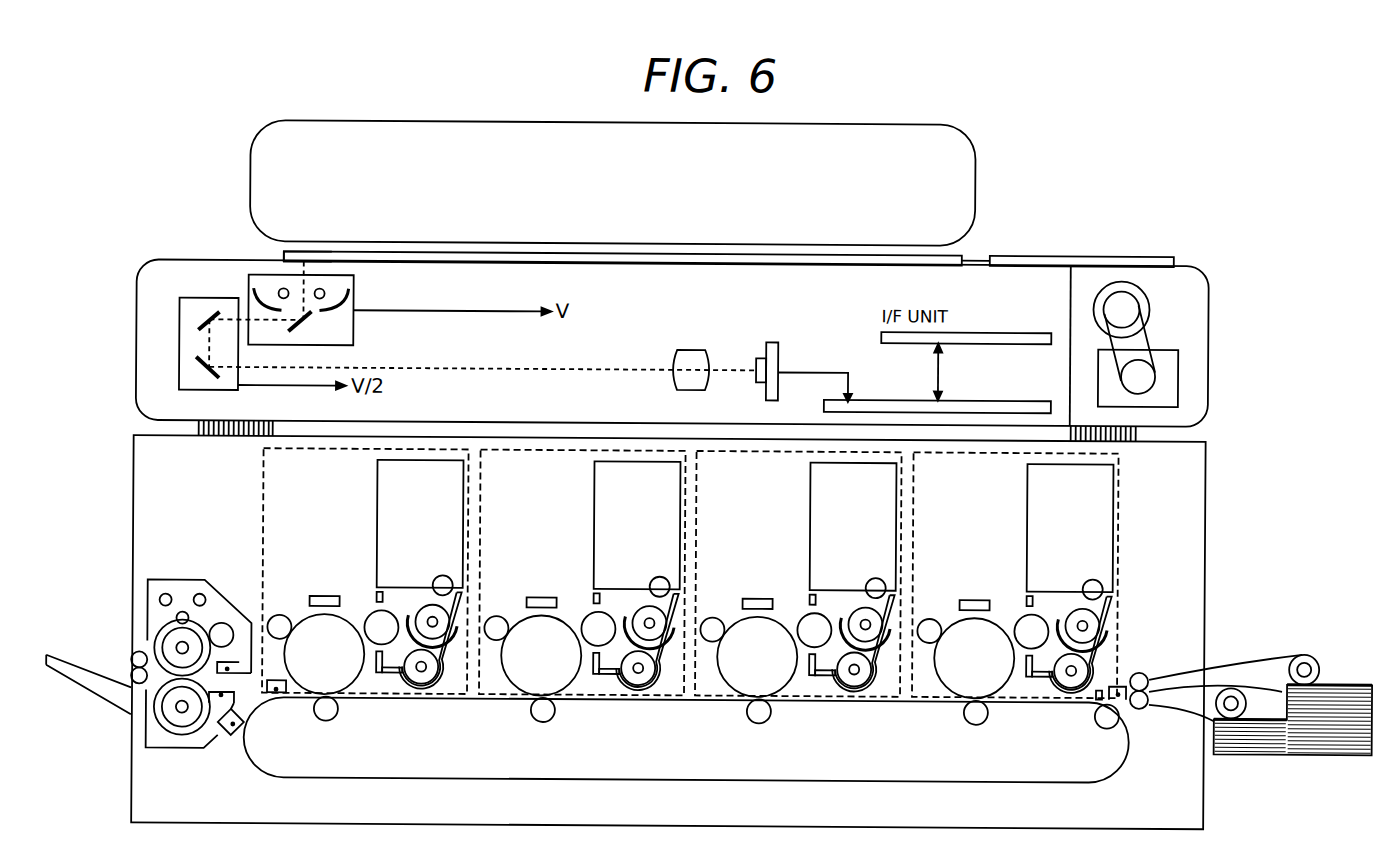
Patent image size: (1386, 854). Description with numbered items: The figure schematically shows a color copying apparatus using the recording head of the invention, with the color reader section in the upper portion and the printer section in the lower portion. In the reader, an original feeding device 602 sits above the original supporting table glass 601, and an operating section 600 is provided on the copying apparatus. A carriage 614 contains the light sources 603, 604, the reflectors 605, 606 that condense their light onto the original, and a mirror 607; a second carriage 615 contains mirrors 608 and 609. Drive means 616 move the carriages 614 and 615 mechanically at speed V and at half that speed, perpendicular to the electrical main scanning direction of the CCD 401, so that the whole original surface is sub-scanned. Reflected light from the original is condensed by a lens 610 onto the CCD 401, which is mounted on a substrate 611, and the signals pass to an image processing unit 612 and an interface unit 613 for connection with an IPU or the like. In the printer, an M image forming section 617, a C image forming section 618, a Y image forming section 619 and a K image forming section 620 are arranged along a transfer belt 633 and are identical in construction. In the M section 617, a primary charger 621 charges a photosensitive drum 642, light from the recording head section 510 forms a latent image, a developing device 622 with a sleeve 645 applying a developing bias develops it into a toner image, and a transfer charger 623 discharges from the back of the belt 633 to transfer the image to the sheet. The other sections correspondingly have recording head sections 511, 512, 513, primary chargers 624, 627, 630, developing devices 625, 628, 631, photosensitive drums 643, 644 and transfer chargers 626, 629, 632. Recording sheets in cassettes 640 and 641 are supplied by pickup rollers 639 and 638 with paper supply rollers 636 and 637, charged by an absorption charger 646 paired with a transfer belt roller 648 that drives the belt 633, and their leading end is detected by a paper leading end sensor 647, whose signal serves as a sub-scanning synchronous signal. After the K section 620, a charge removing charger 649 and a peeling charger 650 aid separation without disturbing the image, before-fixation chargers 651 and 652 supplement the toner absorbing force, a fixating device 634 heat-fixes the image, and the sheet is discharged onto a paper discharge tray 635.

The original feeding device 602 is at (330, 164).
The operating section 600 is at (1118, 244).
The original supporting table glass 601 is at (886, 254).
The carriage 614 is at (330, 258).
The mirror 608 is at (180, 322).
The carriage 615 is at (222, 394).
The mirror 609 is at (212, 385).
The light source 603 is at (352, 286).
The reflector 606 is at (248, 298).
The reflector 605 is at (340, 312).
The mirror 607 is at (312, 336).
The light source 604 is at (278, 290).
The lens 610 is at (690, 350).
The CCD 401 is at (757, 357).
The substrate 611 is at (778, 352).
The image processing unit 612 is at (993, 399).
The interface unit 613 is at (993, 331).
The drive means 616 is at (1195, 301).
The K image forming section 620 is at (310, 486).
The developing device 631 is at (438, 508).
The primary charger 630 is at (281, 617).
The recording head section 513 is at (330, 598).
The transfer belt roller 648 is at (390, 612).
The sleeve 645 is at (306, 672).
The transfer charger 632 is at (337, 718).
The charge removing charger 649 is at (295, 696).
The Y image forming section 619 is at (528, 486).
The developing device 628 is at (651, 508).
The primary charger 627 is at (498, 617).
The recording head section 512 is at (547, 598).
The paper leading end sensor 647 is at (607, 612).
The photosensitive drum 644 is at (523, 672).
The transfer charger 629 is at (552, 720).
The C image forming section 618 is at (744, 486).
The developing device 625 is at (867, 508).
The primary charger 624 is at (714, 617).
The recording head section 511 is at (763, 598).
The absorption charger 646 is at (823, 612).
The photosensitive drum 643 is at (739, 672).
The transfer charger 626 is at (768, 720).
The M image forming section 617 is at (960, 486).
The developing device 622 is at (1084, 508).
The primary charger 621 is at (931, 617).
The recording head section 510 is at (980, 598).
The photosensitive drum 642 is at (956, 672).
The transfer charger 623 is at (985, 718).
The transfer belt 633 is at (322, 781).
The fixating device 634 is at (180, 583).
The before-fixation charger 651 is at (229, 665).
The before-fixation charger 652 is at (236, 705).
The peeling charger 650 is at (229, 740).
The paper discharge tray 635 is at (78, 664).
The paper supply roller 636 is at (1149, 673).
The paper supply roller 637 is at (1148, 712).
The pickup roller 638 is at (1233, 684).
The pickup roller 639 is at (1309, 651).
The cassette 640 is at (1310, 751).
The cassette 641 is at (1357, 681).